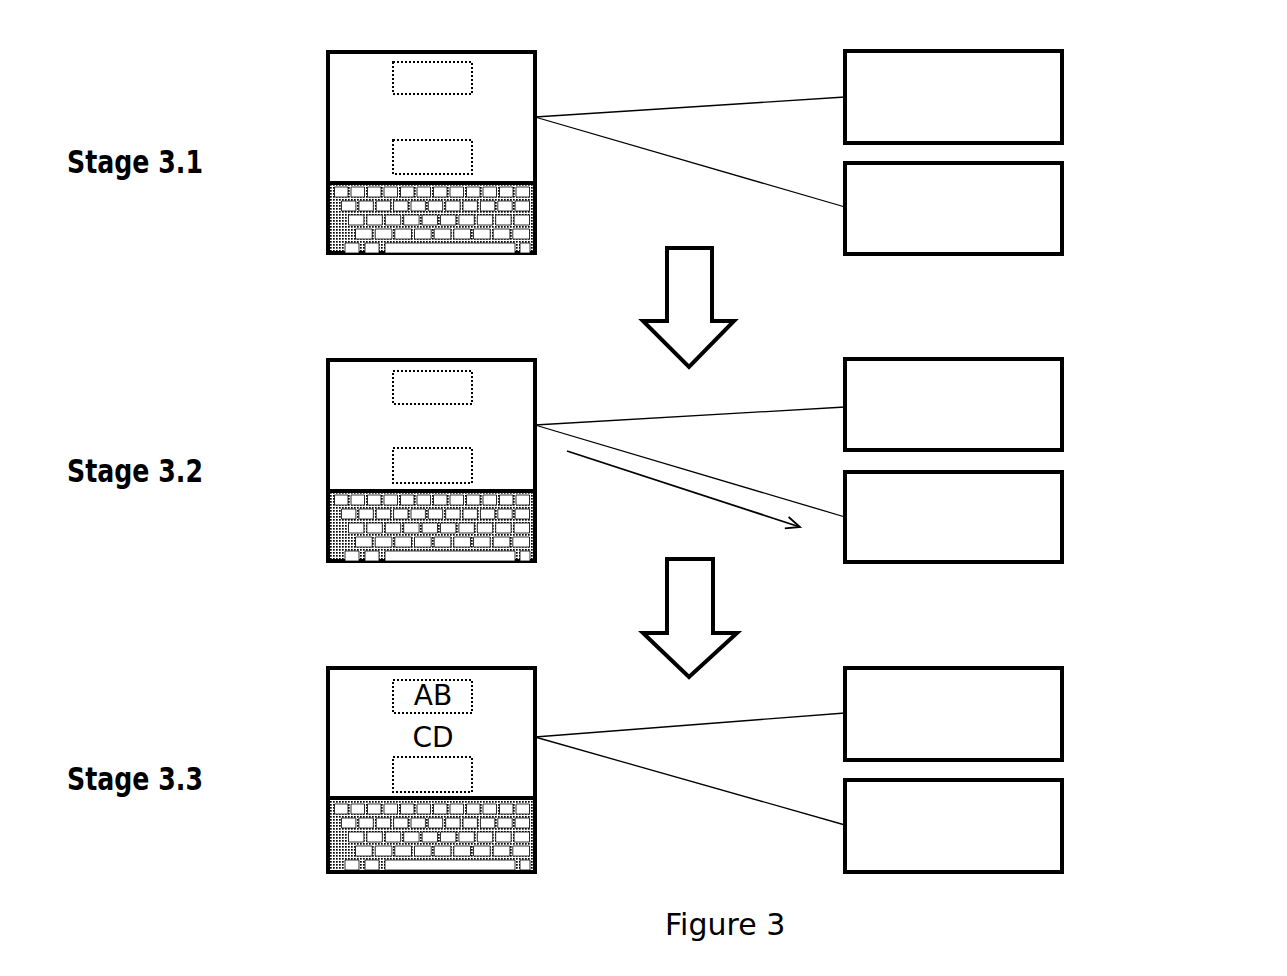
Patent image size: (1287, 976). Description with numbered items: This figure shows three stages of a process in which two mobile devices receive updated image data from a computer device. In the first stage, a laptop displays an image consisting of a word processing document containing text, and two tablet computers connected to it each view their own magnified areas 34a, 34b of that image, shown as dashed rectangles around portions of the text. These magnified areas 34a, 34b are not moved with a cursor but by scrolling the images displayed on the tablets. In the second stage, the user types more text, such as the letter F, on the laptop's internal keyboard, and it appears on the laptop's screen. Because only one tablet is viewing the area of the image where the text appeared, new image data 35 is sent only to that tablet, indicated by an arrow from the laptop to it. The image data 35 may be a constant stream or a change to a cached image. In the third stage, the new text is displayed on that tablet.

The first magnified area 34a is at (394, 79).
The second magnified area 34b is at (394, 155).
The new image data 35 is at (673, 482).